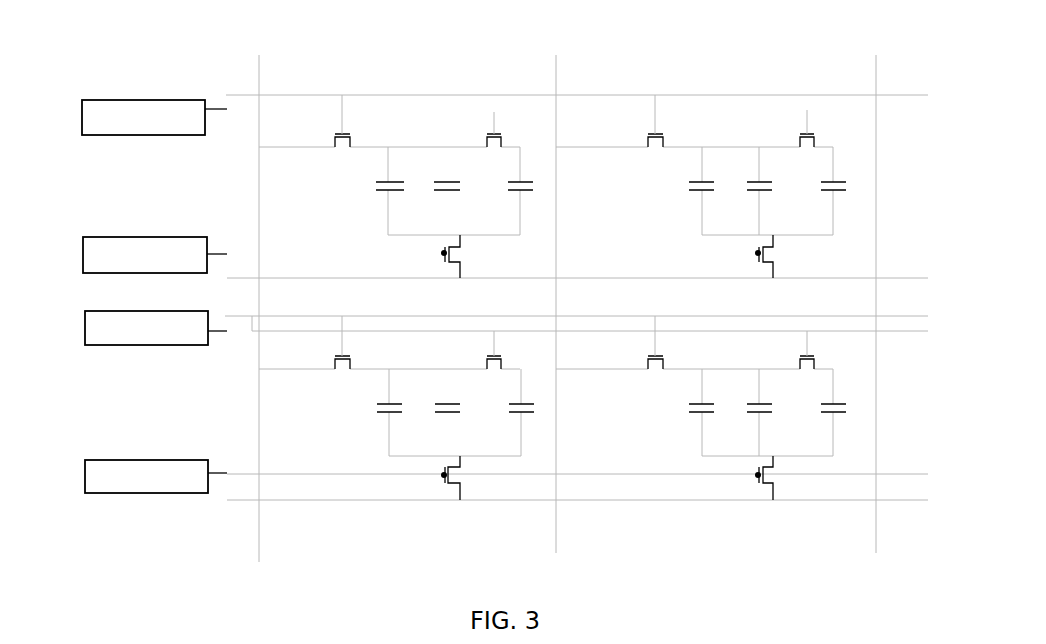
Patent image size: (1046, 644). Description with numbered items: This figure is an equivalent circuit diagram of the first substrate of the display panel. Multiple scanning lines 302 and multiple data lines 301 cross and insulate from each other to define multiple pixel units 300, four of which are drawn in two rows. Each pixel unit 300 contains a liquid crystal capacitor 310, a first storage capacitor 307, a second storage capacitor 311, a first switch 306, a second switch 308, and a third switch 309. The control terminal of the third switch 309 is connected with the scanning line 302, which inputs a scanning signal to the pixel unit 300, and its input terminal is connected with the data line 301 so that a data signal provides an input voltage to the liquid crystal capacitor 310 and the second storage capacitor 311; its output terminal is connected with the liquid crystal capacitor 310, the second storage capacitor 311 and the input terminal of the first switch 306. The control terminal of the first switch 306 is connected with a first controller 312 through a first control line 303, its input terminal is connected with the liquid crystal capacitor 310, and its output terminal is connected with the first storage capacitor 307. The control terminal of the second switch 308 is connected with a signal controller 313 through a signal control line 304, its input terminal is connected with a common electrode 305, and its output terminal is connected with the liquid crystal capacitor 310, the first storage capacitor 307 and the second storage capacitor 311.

The pixel unit 300 is at (416, 203).
The data line 301 is at (556, 298).
The scanning line 302 is at (560, 201).
The first control line 303 is at (240, 110).
The signal control line 304 is at (571, 352).
The common electrode 305 is at (575, 380).
The first switch T1 306 is at (490, 133).
The first storage capacitor Cst1 307 is at (527, 178).
The second switch T2 308 is at (444, 253).
The third switch T3 309 is at (342, 128).
The liquid crystal capacitor CLC 310 is at (370, 193).
The second storage capacitor Cst2 311 is at (439, 193).
The first controller 312 is at (108, 100).
The signal controller 313 is at (107, 237).